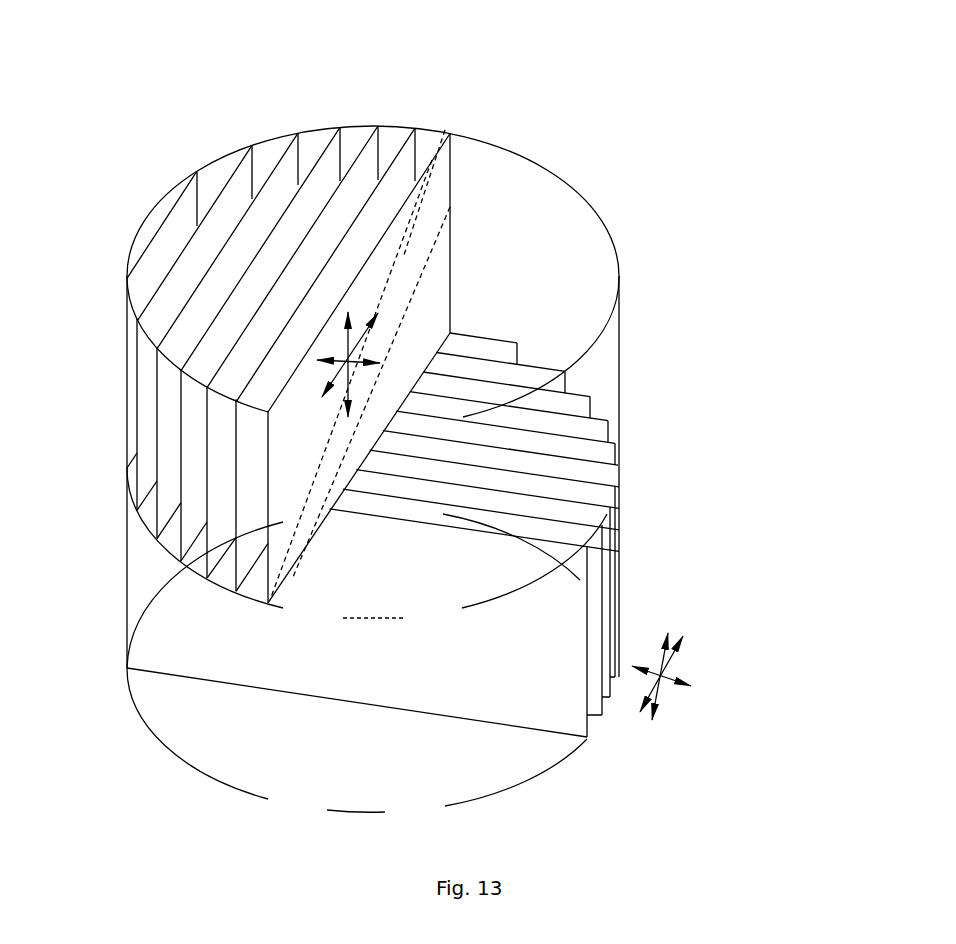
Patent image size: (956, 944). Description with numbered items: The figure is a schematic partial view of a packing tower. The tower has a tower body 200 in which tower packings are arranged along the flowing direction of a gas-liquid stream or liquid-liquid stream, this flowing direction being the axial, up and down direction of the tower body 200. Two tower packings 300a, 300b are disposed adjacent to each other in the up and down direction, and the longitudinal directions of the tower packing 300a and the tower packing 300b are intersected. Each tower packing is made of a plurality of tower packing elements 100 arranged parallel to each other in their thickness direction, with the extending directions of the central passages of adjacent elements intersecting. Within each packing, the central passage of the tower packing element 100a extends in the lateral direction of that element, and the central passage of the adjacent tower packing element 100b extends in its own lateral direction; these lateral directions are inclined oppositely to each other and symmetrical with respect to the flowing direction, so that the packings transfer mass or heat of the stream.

The tower packing element 100 is at (473, 376).
The tower packing element 100a is at (350, 57).
The tower packing element 100b is at (395, 155).
The tower body 200 is at (366, 469).
The tower packing 300a is at (128, 348).
The tower packing 300b is at (138, 552).